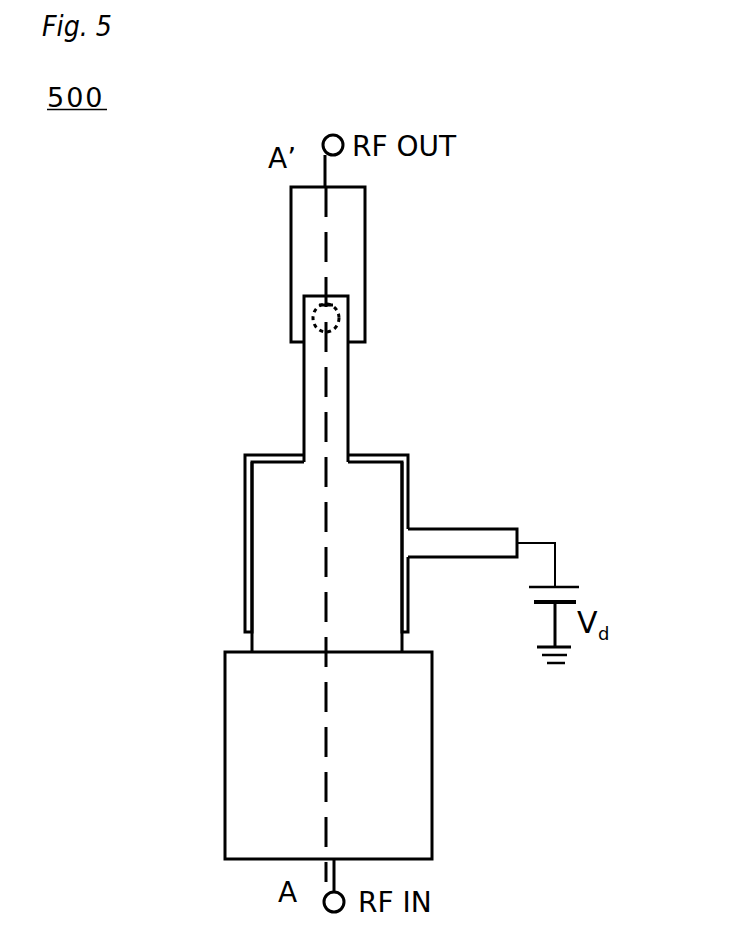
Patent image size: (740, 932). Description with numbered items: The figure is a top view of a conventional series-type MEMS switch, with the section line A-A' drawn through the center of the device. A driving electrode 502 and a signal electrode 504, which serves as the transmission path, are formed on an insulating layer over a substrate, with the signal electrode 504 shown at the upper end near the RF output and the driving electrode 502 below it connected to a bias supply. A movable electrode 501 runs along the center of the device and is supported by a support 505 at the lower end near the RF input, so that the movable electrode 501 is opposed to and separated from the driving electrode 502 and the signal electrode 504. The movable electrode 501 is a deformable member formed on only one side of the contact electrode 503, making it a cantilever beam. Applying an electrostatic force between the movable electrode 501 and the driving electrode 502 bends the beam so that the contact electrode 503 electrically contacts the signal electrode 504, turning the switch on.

The movable electrode 501 is at (315, 387).
The driving electrode 502 is at (407, 488).
The contact electrode 503 is at (342, 316).
The signal electrode 504 is at (302, 253).
The support 505 is at (382, 775).